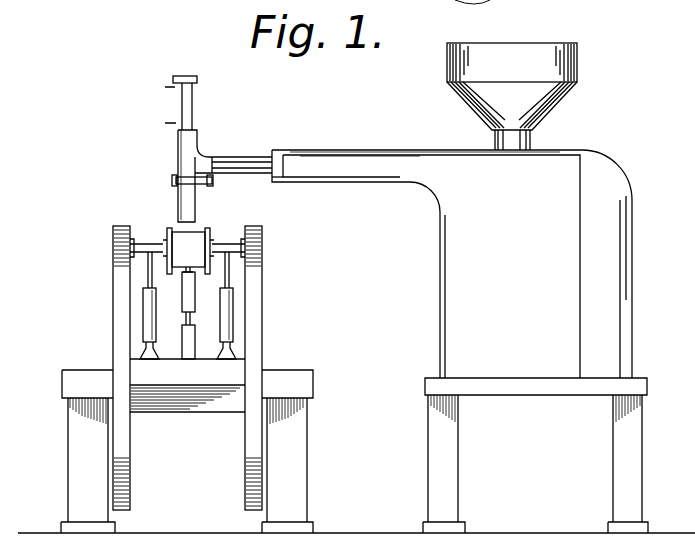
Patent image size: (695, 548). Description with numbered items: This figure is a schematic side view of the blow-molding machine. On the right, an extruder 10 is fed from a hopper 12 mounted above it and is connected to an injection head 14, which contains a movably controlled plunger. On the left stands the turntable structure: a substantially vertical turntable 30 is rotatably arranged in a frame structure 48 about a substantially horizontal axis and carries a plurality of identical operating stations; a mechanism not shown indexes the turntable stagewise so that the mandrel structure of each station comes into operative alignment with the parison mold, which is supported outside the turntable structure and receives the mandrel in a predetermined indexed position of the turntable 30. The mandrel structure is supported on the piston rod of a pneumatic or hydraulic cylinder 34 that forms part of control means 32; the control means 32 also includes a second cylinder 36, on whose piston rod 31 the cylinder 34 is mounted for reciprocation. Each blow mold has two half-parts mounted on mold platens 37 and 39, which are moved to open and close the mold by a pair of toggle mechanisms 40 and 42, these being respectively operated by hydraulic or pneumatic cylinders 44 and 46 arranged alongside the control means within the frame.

The extruder 10 is at (326, 145).
The hopper 12 is at (505, 37).
The injection head 14 is at (190, 144).
The turntable 30 is at (336, 414).
The piston rod 31 is at (186, 317).
The control means 32 is at (187, 315).
The cylinder 34 is at (182, 287).
The second cylinder 36 is at (182, 341).
The mold platen 37 is at (167, 230).
The mold platen 39 is at (177, 219).
The toggle mechanism 40 is at (225, 248).
The toggle mechanism 42 is at (150, 250).
The hydraulic or pneumatic cylinder 44 is at (147, 318).
The hydraulic or pneumatic cylinder 46 is at (233, 333).
The frame structure 48 is at (77, 463).